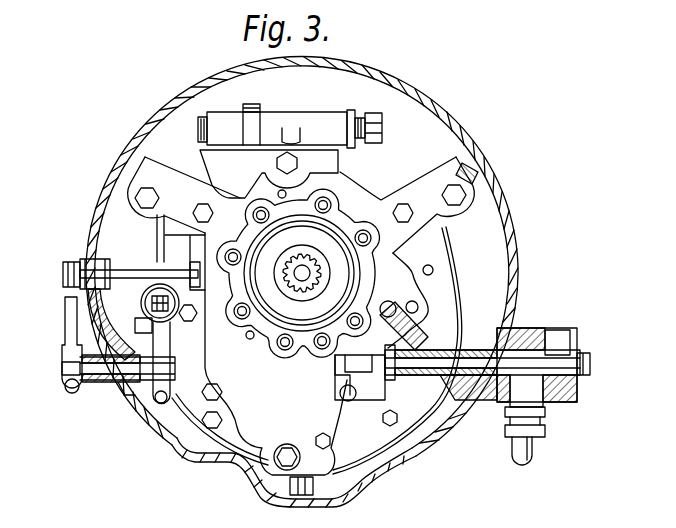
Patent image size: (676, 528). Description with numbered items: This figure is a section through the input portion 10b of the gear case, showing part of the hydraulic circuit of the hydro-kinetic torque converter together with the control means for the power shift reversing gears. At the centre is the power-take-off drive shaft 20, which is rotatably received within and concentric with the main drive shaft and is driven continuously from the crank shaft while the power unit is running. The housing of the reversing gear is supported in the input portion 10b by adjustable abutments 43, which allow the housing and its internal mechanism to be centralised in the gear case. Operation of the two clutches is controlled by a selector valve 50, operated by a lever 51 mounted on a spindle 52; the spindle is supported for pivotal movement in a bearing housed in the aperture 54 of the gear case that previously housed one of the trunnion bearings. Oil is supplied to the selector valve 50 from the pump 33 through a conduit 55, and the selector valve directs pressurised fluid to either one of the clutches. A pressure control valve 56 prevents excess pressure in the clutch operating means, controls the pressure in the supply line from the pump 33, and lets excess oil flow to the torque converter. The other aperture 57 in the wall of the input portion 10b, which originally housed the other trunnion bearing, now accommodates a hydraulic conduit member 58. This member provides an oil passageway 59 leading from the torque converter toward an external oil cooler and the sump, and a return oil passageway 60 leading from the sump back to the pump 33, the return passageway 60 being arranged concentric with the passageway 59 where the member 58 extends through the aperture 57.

The input portion of the gear case 10b is at (505, 203).
The power-take-off drive shaft 20 is at (302, 274).
The pump 33 is at (97, 395).
The abutments 43 is at (140, 162).
The selector valve 50 is at (139, 286).
The lever 51 is at (67, 325).
The spindle 52 is at (82, 386).
The aperture of the gear case 54 is at (120, 393).
The conduit 55 is at (157, 222).
The pressure control valve 56 is at (322, 111).
The aperture 57 is at (478, 402).
The hydraulic conduit member 58 is at (532, 327).
The oil passageway 59 is at (461, 350).
The return oil passageway 60 is at (528, 385).